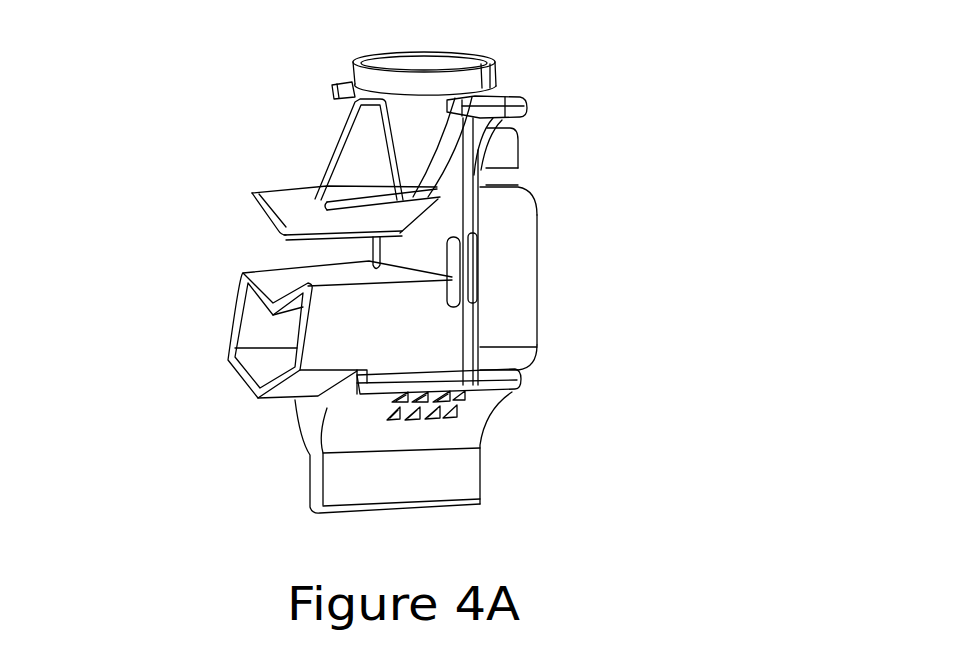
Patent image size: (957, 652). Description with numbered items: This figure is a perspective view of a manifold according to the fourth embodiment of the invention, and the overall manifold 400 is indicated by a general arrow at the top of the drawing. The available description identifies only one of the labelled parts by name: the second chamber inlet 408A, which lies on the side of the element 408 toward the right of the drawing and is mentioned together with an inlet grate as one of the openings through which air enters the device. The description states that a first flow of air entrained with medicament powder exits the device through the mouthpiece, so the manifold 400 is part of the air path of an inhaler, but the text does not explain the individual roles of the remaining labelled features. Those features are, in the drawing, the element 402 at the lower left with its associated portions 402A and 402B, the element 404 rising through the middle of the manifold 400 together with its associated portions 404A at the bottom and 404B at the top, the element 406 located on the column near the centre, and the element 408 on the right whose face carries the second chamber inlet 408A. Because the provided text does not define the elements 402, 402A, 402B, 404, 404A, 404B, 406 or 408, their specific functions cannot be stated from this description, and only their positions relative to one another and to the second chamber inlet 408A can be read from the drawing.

The tool holder assembly 400 is at (551, 57).
The trough / tool receiving channel 402 is at (358, 399).
The V-shaped end opening of channel 402A is at (198, 347).
The perforated skirt / lower wall 402B is at (463, 464).
The post with mounting tab 404 is at (546, 240).
The lower flange 404A is at (525, 422).
The cup / funnel receptacle 404B is at (350, 143).
The slots 406 is at (546, 241).
The body housing 408 is at (611, 278).
The second chamber inlet 408A is at (640, 280).